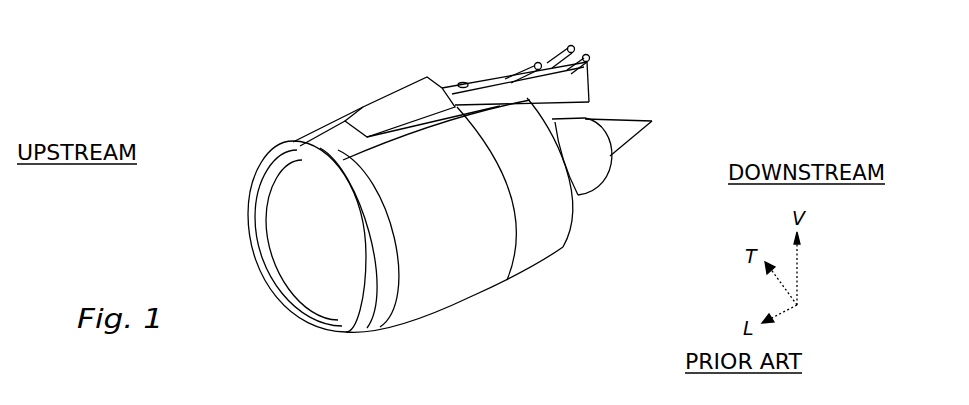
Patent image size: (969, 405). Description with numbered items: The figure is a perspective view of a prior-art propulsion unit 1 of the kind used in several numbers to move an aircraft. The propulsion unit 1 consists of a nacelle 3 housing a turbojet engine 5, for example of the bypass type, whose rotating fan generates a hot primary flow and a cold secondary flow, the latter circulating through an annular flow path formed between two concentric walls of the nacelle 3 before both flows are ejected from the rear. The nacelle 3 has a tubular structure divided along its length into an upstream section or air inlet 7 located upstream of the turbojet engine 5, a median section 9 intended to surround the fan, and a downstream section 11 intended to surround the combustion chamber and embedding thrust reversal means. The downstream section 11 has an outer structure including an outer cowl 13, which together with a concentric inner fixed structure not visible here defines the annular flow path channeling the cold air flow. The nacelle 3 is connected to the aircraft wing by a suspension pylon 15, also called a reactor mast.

The propulsion unit 1 is at (300, 72).
The nacelle 3 is at (465, 282).
The turbojet engine 5 is at (632, 140).
The air inlet 7 is at (288, 145).
The median section 9 is at (412, 160).
The downstream section 11 is at (547, 232).
The outer cowl 13 is at (553, 205).
The suspension pylon 15 is at (487, 70).